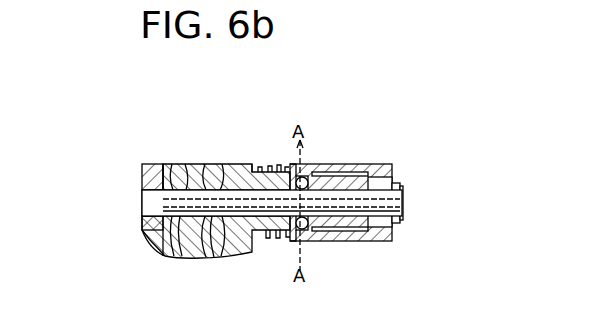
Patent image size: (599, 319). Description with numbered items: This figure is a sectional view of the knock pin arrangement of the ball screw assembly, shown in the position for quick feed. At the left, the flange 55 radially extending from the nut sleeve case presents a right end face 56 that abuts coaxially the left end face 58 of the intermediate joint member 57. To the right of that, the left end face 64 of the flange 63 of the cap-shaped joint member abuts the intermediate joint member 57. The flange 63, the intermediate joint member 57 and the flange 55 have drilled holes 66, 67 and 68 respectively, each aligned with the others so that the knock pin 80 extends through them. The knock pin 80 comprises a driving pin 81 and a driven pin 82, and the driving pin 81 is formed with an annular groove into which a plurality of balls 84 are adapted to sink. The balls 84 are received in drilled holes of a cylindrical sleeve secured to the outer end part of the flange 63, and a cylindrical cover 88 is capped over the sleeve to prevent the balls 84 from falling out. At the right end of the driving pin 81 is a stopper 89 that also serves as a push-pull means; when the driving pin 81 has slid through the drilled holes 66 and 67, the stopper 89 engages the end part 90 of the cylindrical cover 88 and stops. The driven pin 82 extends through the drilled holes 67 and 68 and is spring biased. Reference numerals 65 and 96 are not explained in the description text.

The flange 55 is at (143, 176).
The right end face 56 is at (164, 164).
The intermediate joint member 57 is at (188, 164).
The left end face 58 is at (173, 164).
The flange 63 is at (255, 166).
The left end face 64 is at (222, 164).
The insert 65 is at (207, 164).
The drilled hole 66 is at (214, 257).
The drilled hole 67 is at (182, 256).
The drilled hole 68 is at (150, 238).
The knock pin 80 is at (252, 252).
The driving pin 81 is at (163, 218).
The driven pin 82 is at (142, 197).
The balls 84 is at (316, 164).
The cylindrical cover 88 is at (351, 164).
The stopper 89 is at (402, 186).
The end part 90 is at (390, 164).
The pin 96 is at (279, 165).